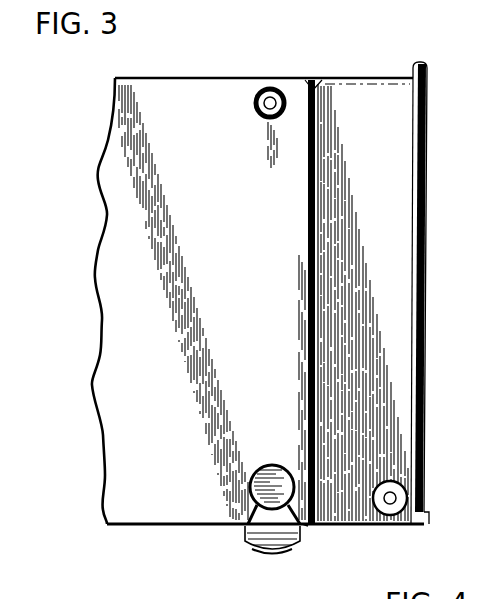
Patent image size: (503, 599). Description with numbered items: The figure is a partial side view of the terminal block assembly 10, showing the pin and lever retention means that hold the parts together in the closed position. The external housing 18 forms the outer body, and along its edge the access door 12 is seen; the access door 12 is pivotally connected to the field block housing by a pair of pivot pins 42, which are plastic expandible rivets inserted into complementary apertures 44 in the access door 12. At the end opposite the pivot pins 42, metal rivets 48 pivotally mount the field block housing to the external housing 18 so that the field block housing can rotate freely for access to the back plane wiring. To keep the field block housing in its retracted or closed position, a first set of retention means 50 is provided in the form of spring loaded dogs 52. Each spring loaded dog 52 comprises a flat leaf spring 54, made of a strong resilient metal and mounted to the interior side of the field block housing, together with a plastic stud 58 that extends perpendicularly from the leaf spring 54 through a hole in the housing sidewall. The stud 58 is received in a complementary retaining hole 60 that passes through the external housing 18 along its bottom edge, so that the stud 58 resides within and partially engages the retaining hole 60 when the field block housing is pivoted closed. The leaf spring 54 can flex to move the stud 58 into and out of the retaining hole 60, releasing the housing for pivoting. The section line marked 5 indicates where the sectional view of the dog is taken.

The section line 5- 5 is at (272, 63).
The terminal block assembly 10 is at (344, 64).
The access door 12 is at (426, 92).
The external housing 18 is at (134, 252).
The pivot pins 42 is at (396, 498).
The apertures 44 is at (427, 514).
The rivets 48 is at (253, 102).
The first set of retention means 50 is at (246, 530).
The spring loaded dogs 52 is at (304, 562).
The leaf spring 54 is at (312, 530).
The stud 58 is at (250, 487).
The retaining hole 60 is at (268, 464).